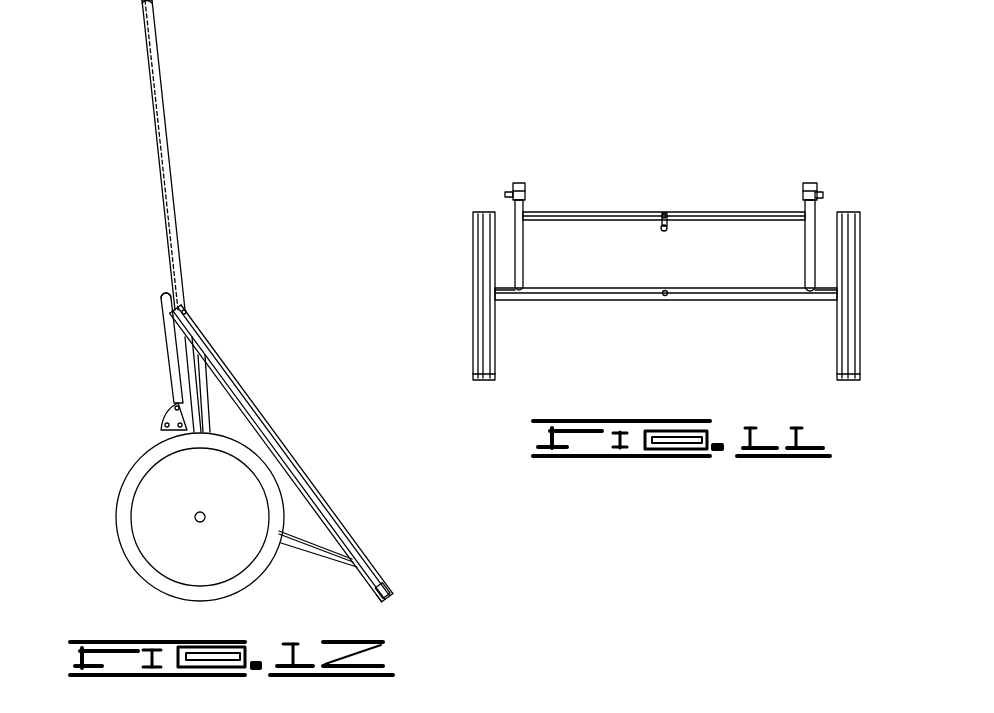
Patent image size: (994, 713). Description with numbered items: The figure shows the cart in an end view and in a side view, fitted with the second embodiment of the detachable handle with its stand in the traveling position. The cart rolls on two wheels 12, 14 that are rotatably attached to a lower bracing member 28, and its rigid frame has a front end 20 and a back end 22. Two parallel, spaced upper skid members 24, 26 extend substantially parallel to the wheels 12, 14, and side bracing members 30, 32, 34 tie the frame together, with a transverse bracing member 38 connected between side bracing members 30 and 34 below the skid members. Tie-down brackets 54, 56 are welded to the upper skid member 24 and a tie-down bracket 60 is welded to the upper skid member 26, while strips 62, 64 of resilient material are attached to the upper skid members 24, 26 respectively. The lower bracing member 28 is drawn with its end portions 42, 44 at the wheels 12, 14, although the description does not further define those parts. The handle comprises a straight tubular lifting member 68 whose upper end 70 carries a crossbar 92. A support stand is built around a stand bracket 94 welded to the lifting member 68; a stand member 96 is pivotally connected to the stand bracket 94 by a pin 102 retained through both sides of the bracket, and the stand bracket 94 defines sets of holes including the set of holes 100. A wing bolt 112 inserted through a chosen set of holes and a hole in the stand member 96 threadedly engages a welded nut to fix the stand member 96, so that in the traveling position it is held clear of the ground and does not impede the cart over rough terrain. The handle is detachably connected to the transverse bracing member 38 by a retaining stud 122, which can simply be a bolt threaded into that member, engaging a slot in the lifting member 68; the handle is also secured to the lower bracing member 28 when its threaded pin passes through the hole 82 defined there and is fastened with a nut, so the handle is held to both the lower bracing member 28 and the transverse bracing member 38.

In FIG. 12, the wheel 12 is at (180, 555).
In FIG. 11, the wheel 12 is at (850, 353).
In FIG. 11, the wheel 14 is at (485, 360).
In FIG. 12, the front end 20 is at (392, 597).
In FIG. 12, the back end 22 is at (162, 300).
In FIG. 12, the upper skid member 24 is at (303, 485).
In FIG. 11, the upper skid member 24 is at (805, 197).
In FIG. 11, the upper skid member 26 is at (525, 192).
In FIG. 11, the lower bracing member 28 is at (578, 295).
In FIG. 12, the side bracing member 30 is at (200, 407).
In FIG. 11, the side bracing member 30 is at (805, 257).
In FIG. 12, the side bracing member 32 is at (282, 547).
In FIG. 11, the side bracing member 34 is at (523, 252).
In FIG. 11, the transverse bracing member 38 is at (707, 215).
In FIG. 11, the axle end 42 is at (823, 302).
In FIG. 11, the axle end 44 is at (503, 295).
In FIG. 12, the tie-down bracket 54 is at (387, 583).
In FIG. 12, the tie-down bracket 56 is at (184, 312).
In FIG. 11, the tie-down bracket 56 is at (823, 193).
In FIG. 11, the tie-down bracket 60 is at (505, 195).
In FIG. 12, the strip of resilient material 62 is at (276, 436).
In FIG. 11, the strip of resilient material 62 is at (811, 183).
In FIG. 11, the strip of resilient material 64 is at (520, 183).
In FIG. 12, the lifting member 68 is at (160, 137).
In FIG. 12, the upper end 70 is at (147, 38).
In FIG. 11, the hole 82 is at (667, 297).
In FIG. 12, the crossbar 92 is at (142, 3).
In FIG. 12, the stand bracket 94 is at (155, 410).
In FIG. 12, the stand member 96 is at (166, 345).
In FIG. 12, the set of holes 100 is at (167, 427).
In FIG. 12, the pin 102 is at (180, 430).
In FIG. 12, the wing bolt 112 is at (178, 405).
In FIG. 11, the retaining stud 122 is at (668, 232).